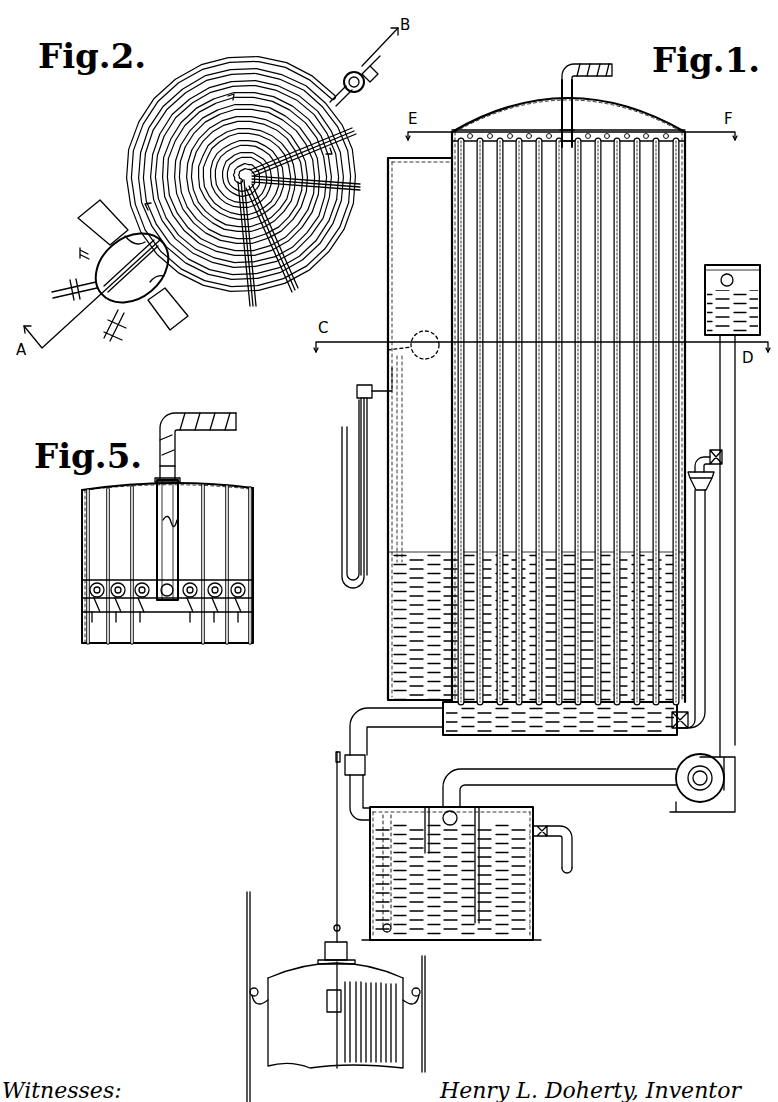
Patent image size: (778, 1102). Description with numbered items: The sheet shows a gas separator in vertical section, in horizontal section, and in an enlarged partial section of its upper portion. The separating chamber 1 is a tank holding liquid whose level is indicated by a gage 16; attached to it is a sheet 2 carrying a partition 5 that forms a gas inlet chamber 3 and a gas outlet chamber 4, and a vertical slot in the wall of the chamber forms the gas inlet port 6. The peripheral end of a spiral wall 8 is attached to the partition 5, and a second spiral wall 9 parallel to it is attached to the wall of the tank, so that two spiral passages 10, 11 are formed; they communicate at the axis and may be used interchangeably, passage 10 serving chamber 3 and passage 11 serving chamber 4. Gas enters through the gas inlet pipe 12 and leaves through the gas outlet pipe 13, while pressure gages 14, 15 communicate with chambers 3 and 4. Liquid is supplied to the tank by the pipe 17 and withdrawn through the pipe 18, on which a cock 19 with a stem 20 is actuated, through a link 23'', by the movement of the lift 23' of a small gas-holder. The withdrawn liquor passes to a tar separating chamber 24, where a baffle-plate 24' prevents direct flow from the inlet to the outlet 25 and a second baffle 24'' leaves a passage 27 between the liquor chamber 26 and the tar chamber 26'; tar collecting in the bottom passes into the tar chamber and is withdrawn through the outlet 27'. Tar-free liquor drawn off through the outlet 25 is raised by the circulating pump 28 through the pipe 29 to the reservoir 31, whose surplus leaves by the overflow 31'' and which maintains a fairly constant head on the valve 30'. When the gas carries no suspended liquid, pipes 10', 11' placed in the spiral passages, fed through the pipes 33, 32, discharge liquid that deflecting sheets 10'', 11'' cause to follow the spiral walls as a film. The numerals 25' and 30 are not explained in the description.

In FIG. 2, the separating chamber 1 is at (272, 62).
In FIG. 5, the separating chamber 1 is at (198, 486).
In FIG. 1, the separating chamber 1 is at (502, 112).
In FIG. 2, the sheet 2 is at (136, 302).
In FIG. 1, the sheet 2 is at (388, 262).
In FIG. 2, the gas inlet chamber 3 is at (134, 270).
In FIG. 1, the gas inlet chamber 3 is at (420, 483).
In FIG. 2, the gas outlet chamber 4 is at (132, 267).
In FIG. 2, the partition 5 is at (131, 266).
In FIG. 2, the gas inlet port 6 is at (154, 285).
In FIG. 2, the spiral wall 8 is at (247, 254).
In FIG. 1, the spiral wall 8 is at (555, 402).
In FIG. 2, the spiral wall 9 is at (274, 246).
In FIG. 1, the spiral wall 9 is at (565, 448).
In FIG. 2, the spiral passage 10 is at (316, 188).
In FIG. 5, the spiral passage 10 is at (156, 560).
In FIG. 1, the spiral passage 10 is at (565, 421).
In FIG. 5, the pipe 10' is at (157, 585).
In FIG. 5, the deflecting sheet 10'' is at (156, 624).
In FIG. 2, the spiral passage 11 is at (313, 144).
In FIG. 5, the spiral passage 11 is at (178, 560).
In FIG. 1, the spiral passage 11 is at (565, 421).
In FIG. 5, the pipe 11' is at (180, 585).
In FIG. 5, the deflecting sheet 11'' is at (180, 624).
In FIG. 2, the gas inlet pipe 12 is at (168, 309).
In FIG. 2, the gas outlet pipe 13 is at (103, 222).
In FIG. 1, the gas outlet pipe 13 is at (388, 345).
In FIG. 2, the pressure gage 14 is at (106, 327).
In FIG. 2, the pressure gage 15 is at (74, 294).
In FIG. 1, the pressure gage 15 is at (342, 460).
In FIG. 2, the gage 16 is at (80, 253).
In FIG. 1, the gage 16 is at (386, 383).
In FIG. 2, the liquid supply pipe 17 is at (340, 86).
In FIG. 1, the liquid supply pipe 17 is at (696, 548).
In FIG. 1, the liquid withdrawal pipe 18 is at (386, 728).
In FIG. 1, the cock 19 is at (365, 765).
In FIG. 1, the stem 20 is at (334, 762).
In FIG. 1, the lift 23' is at (336, 997).
In FIG. 1, the link 23'' is at (323, 847).
In FIG. 1, the tar separating chamber 24 is at (451, 886).
In FIG. 1, the baffle-plate 24' is at (416, 819).
In FIG. 1, the baffle 24'' is at (525, 868).
In FIG. 1, the outlet pipe 25 is at (464, 805).
In FIG. 1, the pipe 25' is at (559, 777).
In FIG. 1, the liquor chamber 26 is at (398, 890).
In FIG. 1, the tar chamber 26' is at (540, 895).
In FIG. 1, the passage 27 is at (479, 949).
In FIG. 1, the tar outlet 27' is at (568, 849).
In FIG. 1, the circulating pump 28 is at (702, 783).
In FIG. 1, the pipe 29 is at (736, 572).
In FIG. 2, the elbow 30 is at (354, 66).
In FIG. 1, the elbow 30 is at (701, 459).
In FIG. 2, the valve 30' is at (380, 77).
In FIG. 1, the valve 30' is at (736, 457).
In FIG. 1, the reservoir 31 is at (734, 286).
In FIG. 1, the overflow 31'' is at (723, 261).
In FIG. 5, the pipe 32 is at (162, 498).
In FIG. 1, the pipe 32 is at (575, 90).
In FIG. 5, the pipe 33 is at (210, 414).
In FIG. 1, the pipe 33 is at (612, 68).